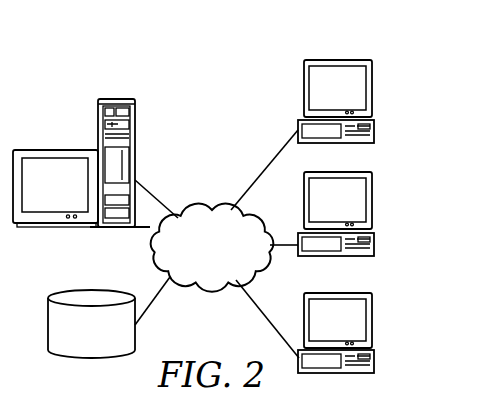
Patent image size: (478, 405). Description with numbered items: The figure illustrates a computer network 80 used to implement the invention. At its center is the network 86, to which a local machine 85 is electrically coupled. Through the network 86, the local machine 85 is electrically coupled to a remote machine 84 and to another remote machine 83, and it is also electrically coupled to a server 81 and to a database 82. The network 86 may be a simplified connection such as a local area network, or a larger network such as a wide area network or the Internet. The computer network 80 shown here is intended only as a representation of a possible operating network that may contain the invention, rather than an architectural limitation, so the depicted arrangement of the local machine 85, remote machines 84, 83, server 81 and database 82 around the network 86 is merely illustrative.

The computer network 80 is at (100, 58).
The server 81 is at (58, 150).
The database 82 is at (105, 343).
The remote machine 83 is at (371, 320).
The remote machine 84 is at (371, 202).
The local machine 85 is at (371, 90).
The network 86 is at (224, 262).